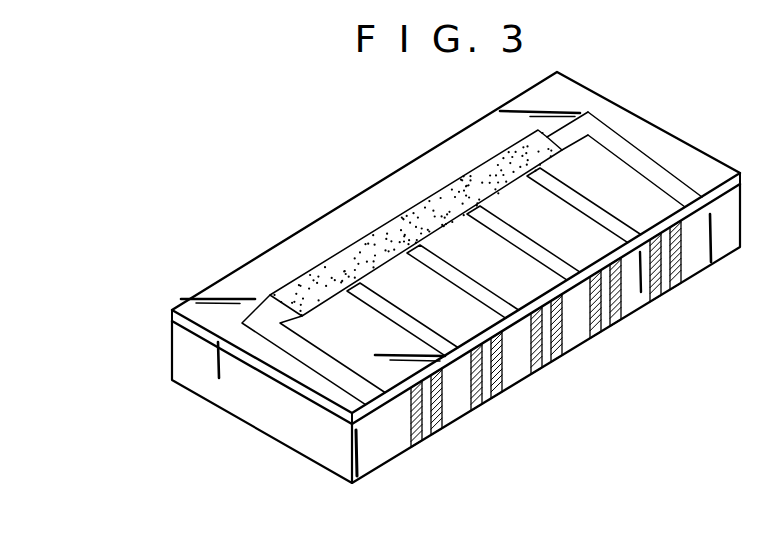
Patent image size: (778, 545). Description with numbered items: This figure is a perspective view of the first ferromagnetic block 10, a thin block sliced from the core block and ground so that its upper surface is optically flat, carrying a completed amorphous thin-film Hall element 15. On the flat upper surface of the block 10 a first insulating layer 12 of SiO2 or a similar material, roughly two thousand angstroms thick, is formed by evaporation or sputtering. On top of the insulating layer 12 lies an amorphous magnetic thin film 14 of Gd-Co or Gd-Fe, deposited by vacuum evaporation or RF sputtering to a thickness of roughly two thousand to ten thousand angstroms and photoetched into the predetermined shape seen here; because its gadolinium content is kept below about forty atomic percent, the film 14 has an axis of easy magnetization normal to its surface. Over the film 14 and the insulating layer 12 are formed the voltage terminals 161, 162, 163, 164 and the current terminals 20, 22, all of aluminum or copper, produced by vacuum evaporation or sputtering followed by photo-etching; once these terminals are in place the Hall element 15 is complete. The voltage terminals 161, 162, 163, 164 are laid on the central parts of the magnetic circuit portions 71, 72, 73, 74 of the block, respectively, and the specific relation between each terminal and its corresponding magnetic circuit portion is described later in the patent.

The first ferromagnetic block 10 is at (257, 407).
The first insulating layer 12 is at (178, 318).
The amorphous magnetic thin film 14 is at (340, 264).
The amorphous thin-film Hall element 15 is at (393, 199).
The current terminal 20 is at (648, 158).
The current terminal 22 is at (357, 378).
The voltage terminal 161 is at (595, 215).
The voltage terminal 162 is at (540, 257).
The voltage terminal 163 is at (483, 293).
The voltage terminal 164 is at (422, 327).
The magnetic circuit portion 71 is at (628, 302).
The magnetic circuit portion 72 is at (570, 335).
The magnetic circuit portion 73 is at (513, 363).
The magnetic circuit portion 74 is at (455, 400).